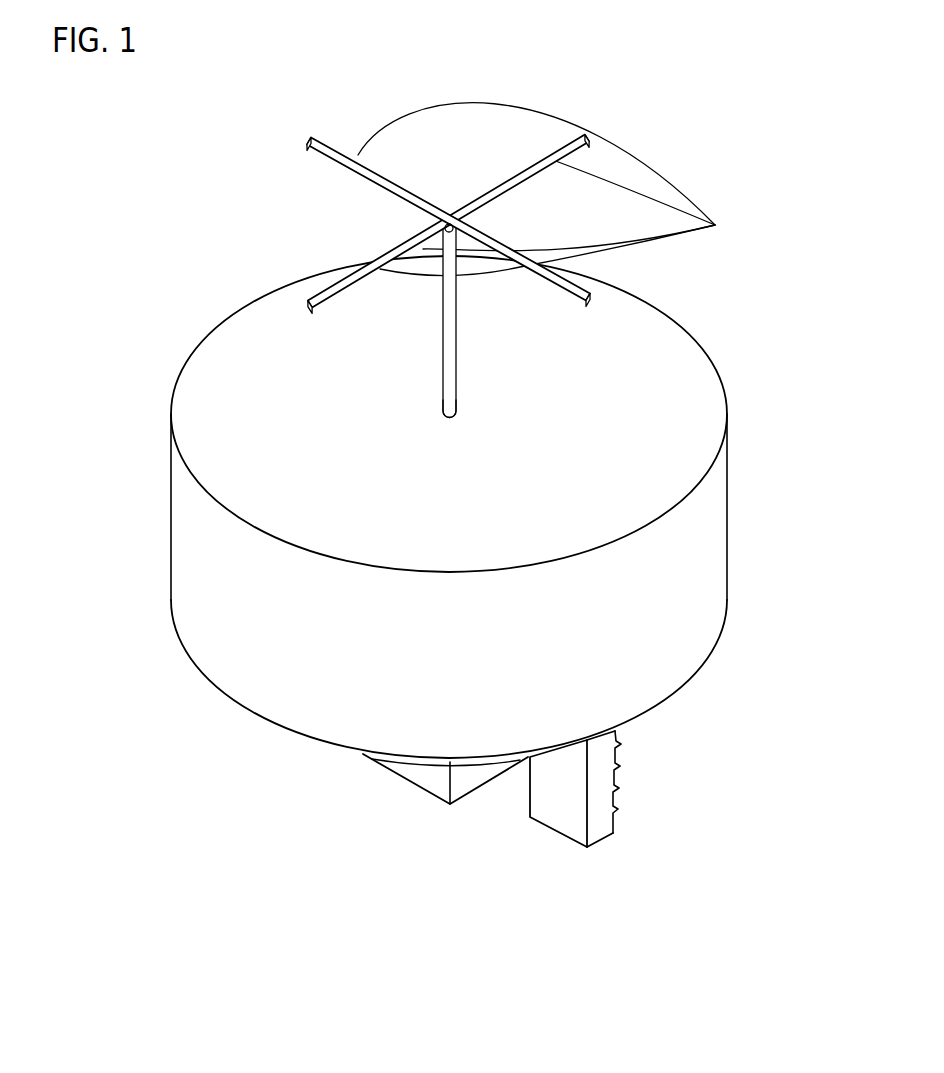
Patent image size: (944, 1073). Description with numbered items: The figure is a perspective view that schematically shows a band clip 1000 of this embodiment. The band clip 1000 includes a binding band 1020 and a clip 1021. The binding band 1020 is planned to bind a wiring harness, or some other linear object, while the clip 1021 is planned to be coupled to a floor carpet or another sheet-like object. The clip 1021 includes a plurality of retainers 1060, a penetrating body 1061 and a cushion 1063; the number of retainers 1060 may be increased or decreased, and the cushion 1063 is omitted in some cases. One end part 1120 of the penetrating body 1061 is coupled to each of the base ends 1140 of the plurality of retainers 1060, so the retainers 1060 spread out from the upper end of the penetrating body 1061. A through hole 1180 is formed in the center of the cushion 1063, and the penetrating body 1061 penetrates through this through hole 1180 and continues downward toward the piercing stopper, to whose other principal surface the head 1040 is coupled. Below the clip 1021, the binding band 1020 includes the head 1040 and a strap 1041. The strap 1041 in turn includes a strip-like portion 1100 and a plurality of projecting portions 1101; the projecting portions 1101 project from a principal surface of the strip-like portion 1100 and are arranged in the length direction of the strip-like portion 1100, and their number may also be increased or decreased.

The band clip 1000 is at (708, 158).
The clip 1021 is at (775, 208).
The retainers 1060 is at (565, 189).
The penetrating body 1061 is at (457, 360).
The cushion 1063 is at (683, 320).
The base ends of the retainers 1140 is at (448, 207).
The one end part of the penetrating body 1120 is at (458, 224).
The through hole 1180 is at (446, 421).
The binding band 1020 is at (361, 835).
The head 1040 is at (435, 797).
The strap 1041 is at (428, 870).
The strip-like portion 1100 is at (543, 827).
The projecting portions 1101 is at (617, 808).